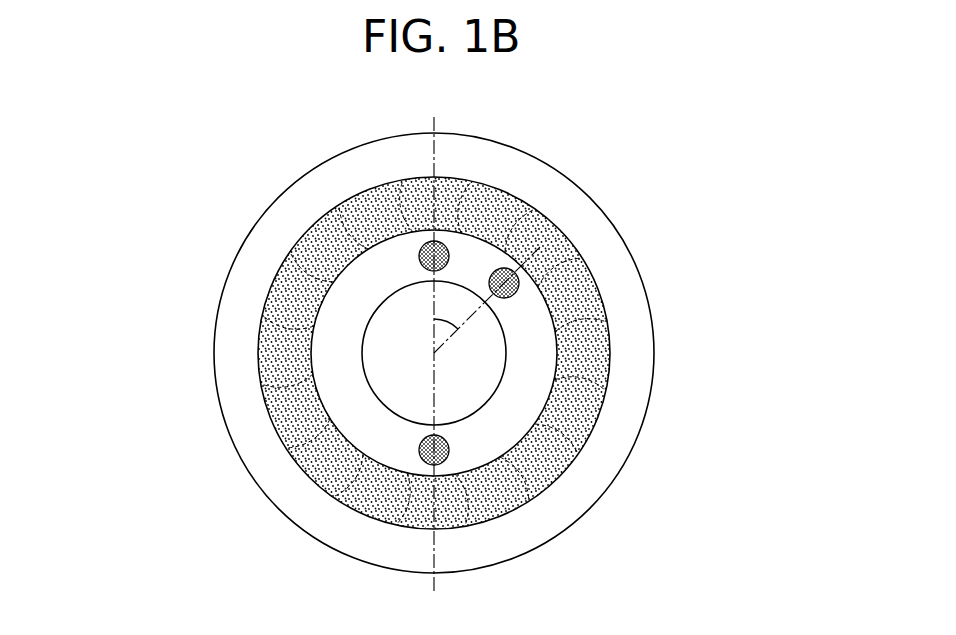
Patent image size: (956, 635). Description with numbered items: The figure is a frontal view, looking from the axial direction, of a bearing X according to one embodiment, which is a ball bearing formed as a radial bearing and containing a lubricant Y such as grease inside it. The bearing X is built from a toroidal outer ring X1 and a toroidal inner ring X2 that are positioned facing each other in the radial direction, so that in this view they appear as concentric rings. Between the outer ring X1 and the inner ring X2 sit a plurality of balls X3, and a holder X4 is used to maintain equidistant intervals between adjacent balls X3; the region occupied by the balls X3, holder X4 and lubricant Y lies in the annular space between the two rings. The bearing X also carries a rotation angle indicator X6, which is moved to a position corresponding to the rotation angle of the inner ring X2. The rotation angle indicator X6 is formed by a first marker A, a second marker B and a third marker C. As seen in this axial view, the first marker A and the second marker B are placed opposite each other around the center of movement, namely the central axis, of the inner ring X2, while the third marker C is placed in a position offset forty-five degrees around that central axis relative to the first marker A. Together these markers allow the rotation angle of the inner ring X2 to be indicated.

The bearing X is at (573, 157).
The outer ring X1 is at (610, 452).
The inner ring X2 is at (503, 422).
The balls X3 is at (303, 477).
The holder X4 is at (357, 513).
The rotation angle indicator X6 is at (385, 370).
The lubricant Y is at (270, 417).
The first marker A is at (450, 250).
The second marker B is at (450, 452).
The third marker C is at (506, 298).